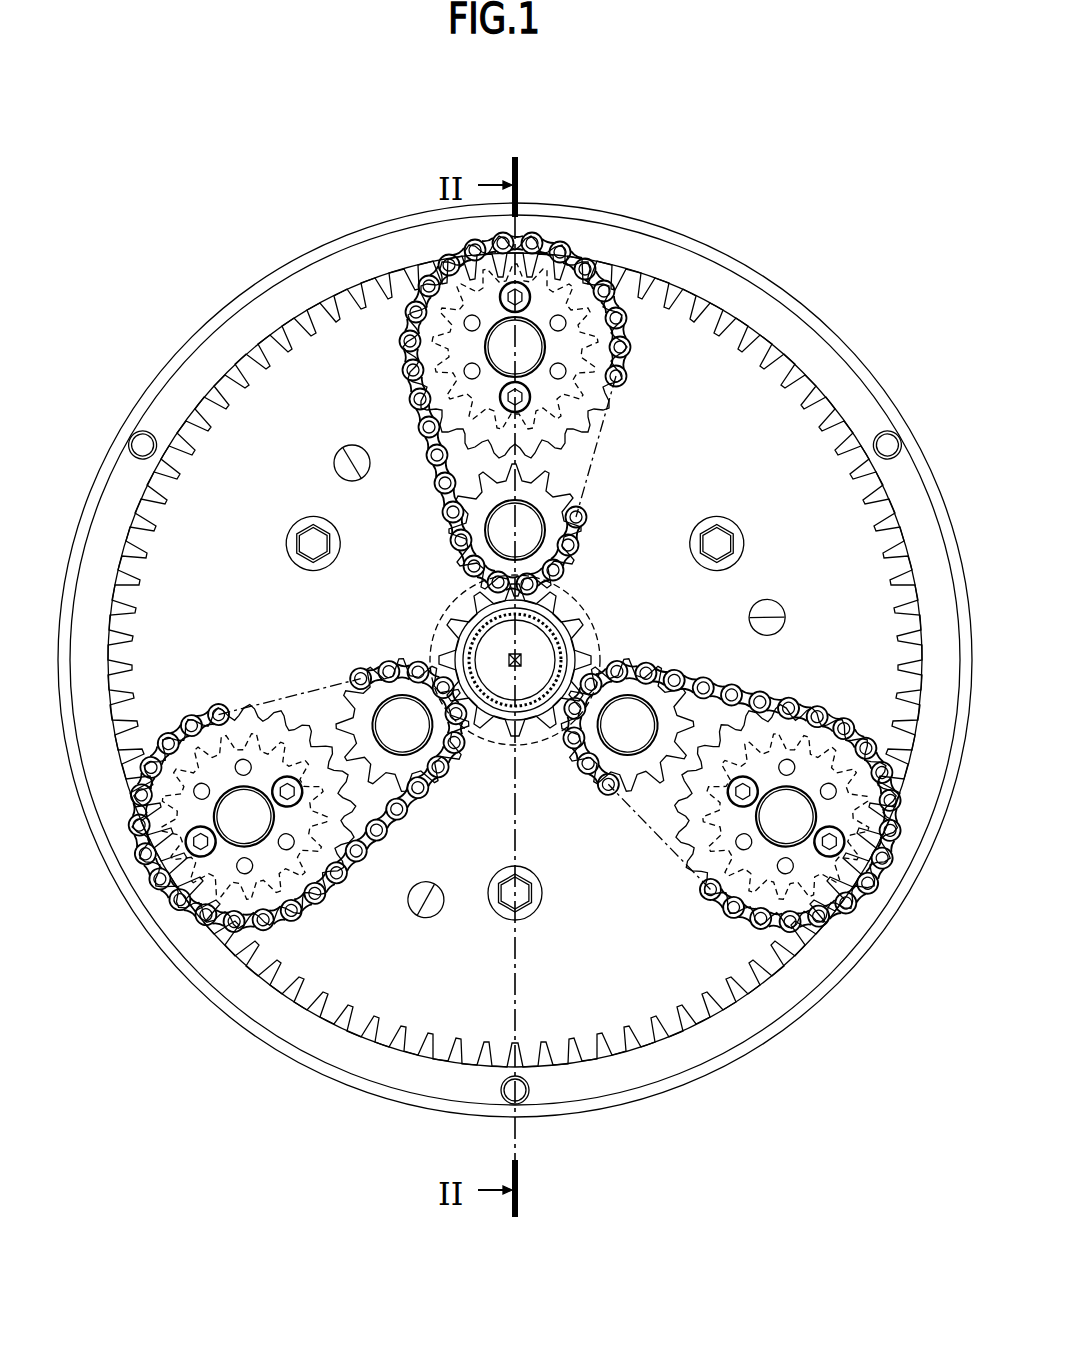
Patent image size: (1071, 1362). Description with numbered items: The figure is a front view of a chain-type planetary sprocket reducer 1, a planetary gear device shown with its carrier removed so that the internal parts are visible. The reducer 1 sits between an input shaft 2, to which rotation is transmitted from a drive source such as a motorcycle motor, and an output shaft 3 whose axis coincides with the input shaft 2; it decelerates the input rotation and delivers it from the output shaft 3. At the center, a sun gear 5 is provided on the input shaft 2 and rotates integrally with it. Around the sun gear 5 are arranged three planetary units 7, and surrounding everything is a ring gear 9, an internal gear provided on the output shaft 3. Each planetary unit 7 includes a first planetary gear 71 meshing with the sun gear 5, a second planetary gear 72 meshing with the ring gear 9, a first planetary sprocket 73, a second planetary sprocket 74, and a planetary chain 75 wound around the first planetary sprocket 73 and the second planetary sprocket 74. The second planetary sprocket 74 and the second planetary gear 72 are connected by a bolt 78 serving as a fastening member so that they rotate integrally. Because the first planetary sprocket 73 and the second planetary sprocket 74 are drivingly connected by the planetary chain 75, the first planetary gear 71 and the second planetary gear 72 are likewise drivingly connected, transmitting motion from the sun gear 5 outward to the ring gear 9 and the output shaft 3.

The chain-type planetary sprocket reducer 1 is at (596, 135).
The input shaft 2 is at (542, 655).
The output shaft 3 is at (572, 610).
The sun gear 5 is at (455, 614).
The planetary unit 7 is at (600, 240).
The ring gear 9 is at (740, 298).
The first planetary gear 71 is at (585, 496).
The second planetary gear 72 is at (412, 375).
The first planetary sprocket 73 is at (481, 526).
The second planetary sprocket 74 is at (598, 428).
The planetary chain 75 is at (625, 372).
The bolt 78 is at (446, 276).